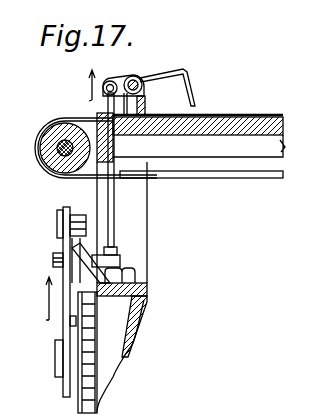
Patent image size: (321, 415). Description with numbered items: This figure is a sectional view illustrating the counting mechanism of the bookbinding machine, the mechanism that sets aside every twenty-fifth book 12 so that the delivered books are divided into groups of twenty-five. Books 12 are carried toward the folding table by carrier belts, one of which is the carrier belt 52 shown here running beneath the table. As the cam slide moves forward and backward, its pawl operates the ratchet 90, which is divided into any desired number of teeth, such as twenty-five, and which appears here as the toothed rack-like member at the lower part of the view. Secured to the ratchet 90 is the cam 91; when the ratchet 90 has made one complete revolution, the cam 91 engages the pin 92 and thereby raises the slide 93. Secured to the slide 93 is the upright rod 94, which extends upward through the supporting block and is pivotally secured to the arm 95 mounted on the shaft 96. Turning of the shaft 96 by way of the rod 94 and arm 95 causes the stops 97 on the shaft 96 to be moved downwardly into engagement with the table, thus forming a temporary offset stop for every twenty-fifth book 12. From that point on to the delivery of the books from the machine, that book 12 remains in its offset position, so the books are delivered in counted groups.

The book 12 is at (243, 115).
The carrier belt 52 is at (230, 178).
The ratchet 90 is at (97, 412).
The cam 91 is at (77, 350).
The pin 92 is at (70, 321).
The slide 93 is at (67, 388).
The rod 94 is at (110, 218).
The arm 95 is at (123, 62).
The shaft 96 is at (136, 75).
The stops 97 is at (198, 52).